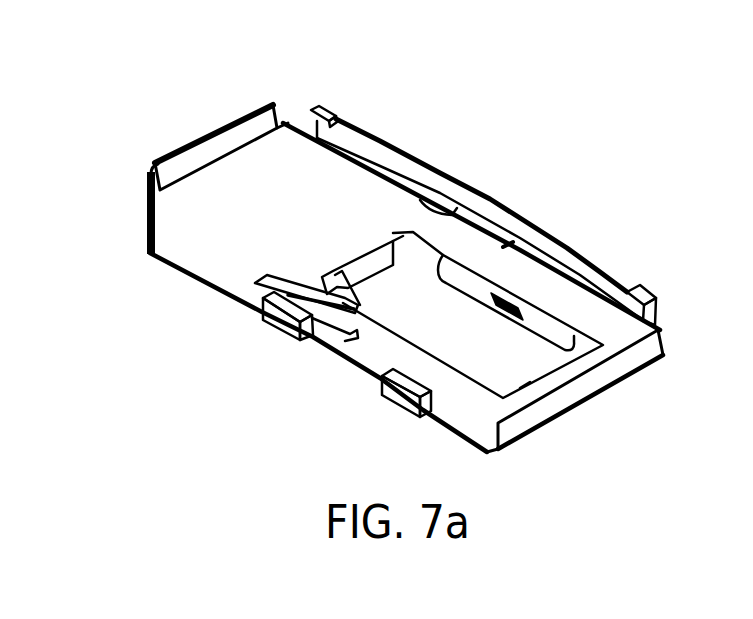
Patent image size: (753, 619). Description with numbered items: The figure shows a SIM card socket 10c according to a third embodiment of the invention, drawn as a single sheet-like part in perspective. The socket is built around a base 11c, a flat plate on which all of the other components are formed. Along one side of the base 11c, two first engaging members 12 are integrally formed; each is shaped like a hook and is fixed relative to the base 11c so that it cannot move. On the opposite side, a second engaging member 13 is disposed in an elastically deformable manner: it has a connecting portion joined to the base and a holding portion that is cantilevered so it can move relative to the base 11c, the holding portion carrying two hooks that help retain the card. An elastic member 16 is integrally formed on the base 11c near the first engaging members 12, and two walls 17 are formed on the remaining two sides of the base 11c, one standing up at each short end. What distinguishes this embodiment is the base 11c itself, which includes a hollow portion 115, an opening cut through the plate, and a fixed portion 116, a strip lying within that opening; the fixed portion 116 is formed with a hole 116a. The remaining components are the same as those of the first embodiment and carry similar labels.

The SIM card socket 10c is at (88, 26).
The base 11c is at (257, 220).
The wall 17 is at (190, 165).
The second engaging member 13 is at (566, 250).
The first engaging member 12 is at (273, 326).
The elastic member 16 is at (333, 332).
The hollow portion 115 is at (405, 298).
The fixed portion 116 is at (458, 274).
The hole 116a is at (515, 304).